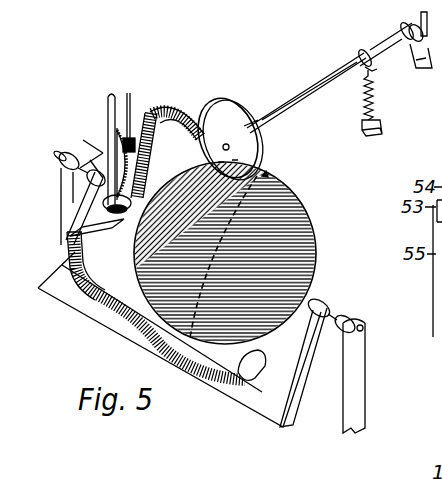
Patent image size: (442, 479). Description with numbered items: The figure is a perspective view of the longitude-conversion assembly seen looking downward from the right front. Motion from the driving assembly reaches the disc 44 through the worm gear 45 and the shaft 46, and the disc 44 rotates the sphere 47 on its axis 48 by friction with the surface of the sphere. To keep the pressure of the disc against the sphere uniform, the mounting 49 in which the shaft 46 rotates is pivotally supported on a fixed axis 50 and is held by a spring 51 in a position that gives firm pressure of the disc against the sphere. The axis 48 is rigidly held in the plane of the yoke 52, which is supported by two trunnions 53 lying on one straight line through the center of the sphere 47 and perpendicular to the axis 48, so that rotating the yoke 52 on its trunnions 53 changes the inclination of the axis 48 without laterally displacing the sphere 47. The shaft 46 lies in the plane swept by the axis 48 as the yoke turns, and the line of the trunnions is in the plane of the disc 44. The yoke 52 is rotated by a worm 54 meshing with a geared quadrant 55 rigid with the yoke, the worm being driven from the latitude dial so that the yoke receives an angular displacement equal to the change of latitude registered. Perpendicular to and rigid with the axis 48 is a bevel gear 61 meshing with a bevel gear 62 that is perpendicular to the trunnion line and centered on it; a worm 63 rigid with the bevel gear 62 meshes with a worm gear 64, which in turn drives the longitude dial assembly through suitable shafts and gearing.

The disc 44 is at (230, 106).
The worm gear 45 is at (411, 30).
The shaft 46 is at (321, 83).
The sphere 47 is at (318, 242).
The axis 48 is at (266, 176).
The mounting 49 is at (380, 48).
The fixed axis 50 is at (419, 67).
The spring 51 is at (378, 106).
The yoke 52 is at (262, 412).
The trunnions 53 is at (62, 170).
The worm 54 is at (136, 145).
The geared quadrant 55 is at (103, 152).
The bevel gear 61 is at (252, 364).
The bevel gear 62 is at (171, 108).
The worm 63 is at (148, 170).
The worm gear 64 is at (112, 212).